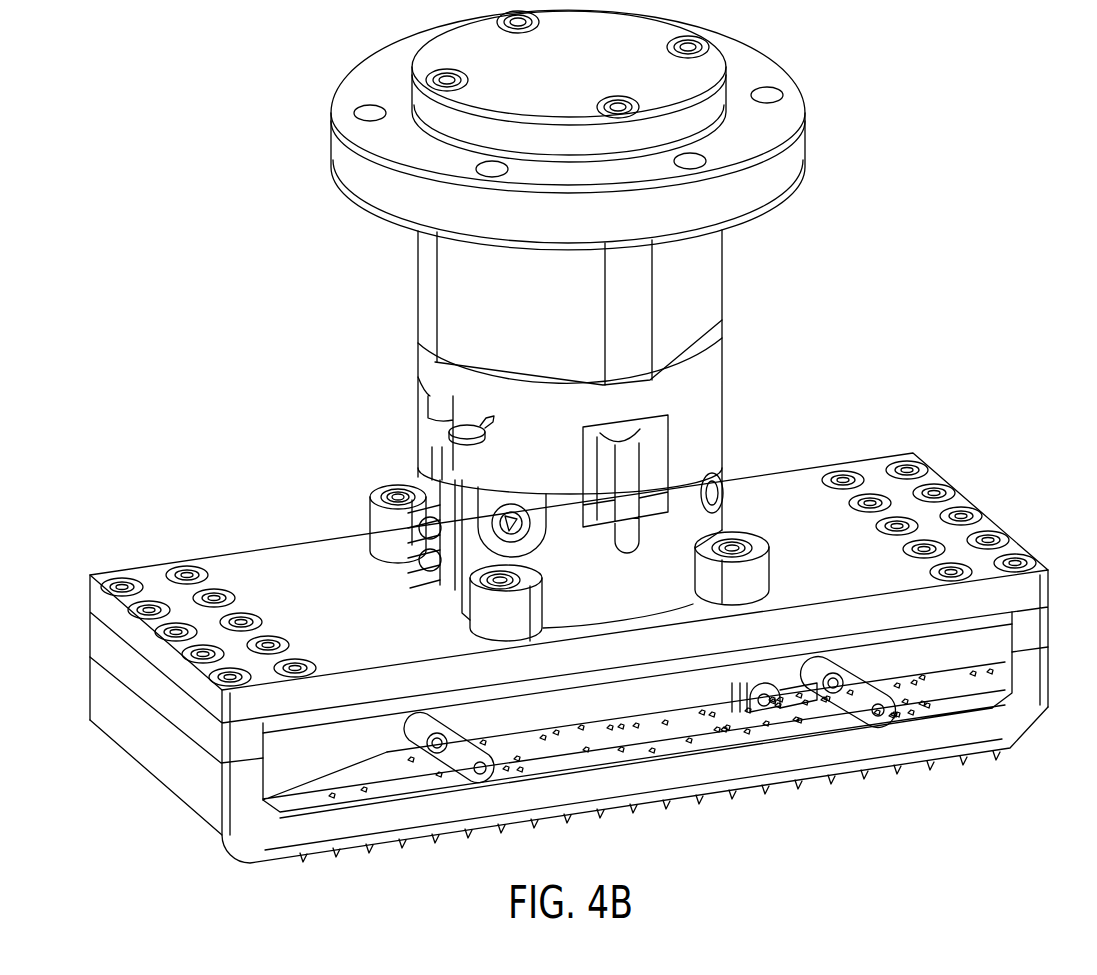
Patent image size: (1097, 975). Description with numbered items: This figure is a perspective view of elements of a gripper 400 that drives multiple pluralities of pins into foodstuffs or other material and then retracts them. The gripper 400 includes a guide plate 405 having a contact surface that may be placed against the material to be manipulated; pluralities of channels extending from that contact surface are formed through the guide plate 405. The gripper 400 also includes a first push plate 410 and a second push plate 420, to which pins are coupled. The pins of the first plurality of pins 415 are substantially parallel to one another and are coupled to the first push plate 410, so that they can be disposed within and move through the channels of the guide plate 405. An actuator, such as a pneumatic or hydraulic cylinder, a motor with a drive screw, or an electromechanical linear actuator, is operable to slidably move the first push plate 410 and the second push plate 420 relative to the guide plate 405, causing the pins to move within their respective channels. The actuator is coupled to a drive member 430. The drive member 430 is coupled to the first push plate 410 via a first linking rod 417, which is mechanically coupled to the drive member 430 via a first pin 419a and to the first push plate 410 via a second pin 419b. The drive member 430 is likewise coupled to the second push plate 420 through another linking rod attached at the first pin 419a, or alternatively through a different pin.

The gripper 400 is at (881, 242).
The guide plate 405 is at (272, 840).
The first push plate 410 is at (345, 795).
The first plurality of pins 415 is at (442, 840).
The second push plate 420 is at (655, 717).
The drive member 430 is at (738, 717).
The first linking rod 417 is at (867, 725).
The first pin 419a is at (833, 700).
The second pin 419b is at (878, 712).